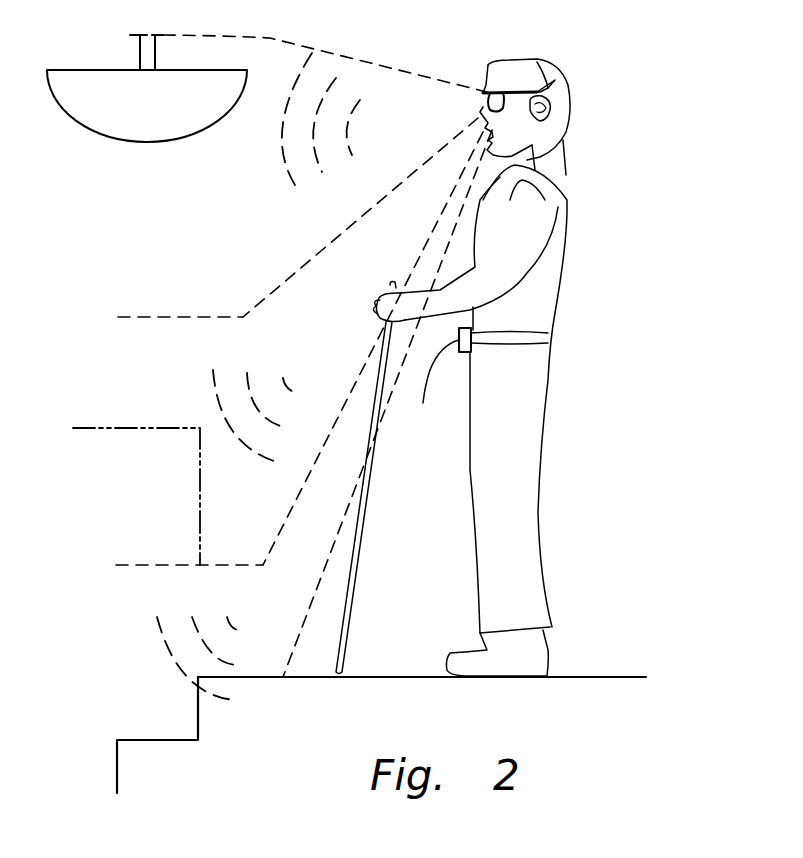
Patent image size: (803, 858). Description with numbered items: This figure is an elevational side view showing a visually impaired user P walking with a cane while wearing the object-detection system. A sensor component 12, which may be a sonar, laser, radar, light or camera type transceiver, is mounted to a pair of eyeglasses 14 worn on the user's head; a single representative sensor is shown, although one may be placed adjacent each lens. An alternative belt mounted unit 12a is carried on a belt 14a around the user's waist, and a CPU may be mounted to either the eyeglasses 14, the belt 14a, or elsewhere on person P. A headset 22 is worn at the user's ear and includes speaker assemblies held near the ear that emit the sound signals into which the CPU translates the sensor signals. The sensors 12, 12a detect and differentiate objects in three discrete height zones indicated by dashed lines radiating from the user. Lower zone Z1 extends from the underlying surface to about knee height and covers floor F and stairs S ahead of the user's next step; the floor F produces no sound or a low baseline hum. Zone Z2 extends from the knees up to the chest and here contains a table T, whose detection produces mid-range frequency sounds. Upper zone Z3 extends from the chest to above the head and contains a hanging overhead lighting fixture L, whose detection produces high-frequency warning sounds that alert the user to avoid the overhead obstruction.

The sensor component 12 is at (508, 92).
The eyeglasses 14 is at (540, 80).
The headset 22 is at (548, 112).
The belt 14a is at (550, 333).
The belt mounted unit 12a is at (427, 391).
The overhead lighting fixture L is at (110, 137).
The user P is at (568, 210).
The floor F is at (593, 676).
The stairs S is at (117, 760).
The table T is at (131, 427).
The lower zone Z1 is at (125, 648).
The zone Z2 is at (160, 347).
The upper zone Z3 is at (140, 228).